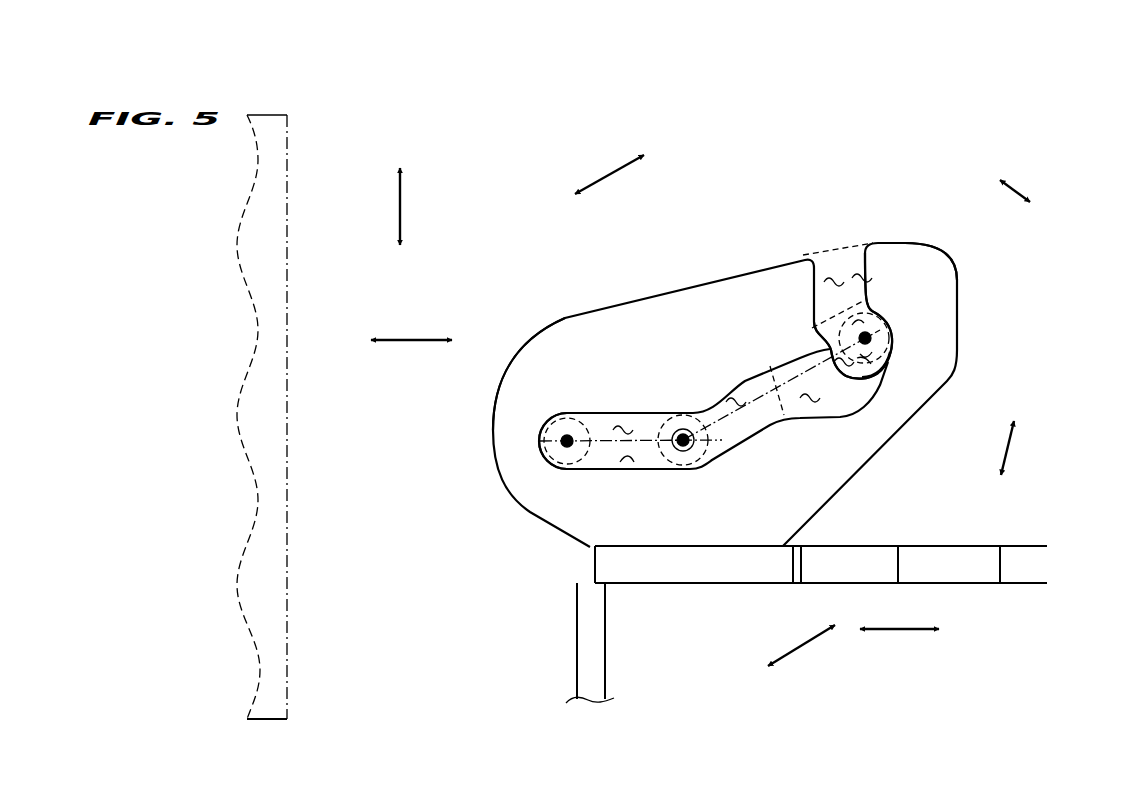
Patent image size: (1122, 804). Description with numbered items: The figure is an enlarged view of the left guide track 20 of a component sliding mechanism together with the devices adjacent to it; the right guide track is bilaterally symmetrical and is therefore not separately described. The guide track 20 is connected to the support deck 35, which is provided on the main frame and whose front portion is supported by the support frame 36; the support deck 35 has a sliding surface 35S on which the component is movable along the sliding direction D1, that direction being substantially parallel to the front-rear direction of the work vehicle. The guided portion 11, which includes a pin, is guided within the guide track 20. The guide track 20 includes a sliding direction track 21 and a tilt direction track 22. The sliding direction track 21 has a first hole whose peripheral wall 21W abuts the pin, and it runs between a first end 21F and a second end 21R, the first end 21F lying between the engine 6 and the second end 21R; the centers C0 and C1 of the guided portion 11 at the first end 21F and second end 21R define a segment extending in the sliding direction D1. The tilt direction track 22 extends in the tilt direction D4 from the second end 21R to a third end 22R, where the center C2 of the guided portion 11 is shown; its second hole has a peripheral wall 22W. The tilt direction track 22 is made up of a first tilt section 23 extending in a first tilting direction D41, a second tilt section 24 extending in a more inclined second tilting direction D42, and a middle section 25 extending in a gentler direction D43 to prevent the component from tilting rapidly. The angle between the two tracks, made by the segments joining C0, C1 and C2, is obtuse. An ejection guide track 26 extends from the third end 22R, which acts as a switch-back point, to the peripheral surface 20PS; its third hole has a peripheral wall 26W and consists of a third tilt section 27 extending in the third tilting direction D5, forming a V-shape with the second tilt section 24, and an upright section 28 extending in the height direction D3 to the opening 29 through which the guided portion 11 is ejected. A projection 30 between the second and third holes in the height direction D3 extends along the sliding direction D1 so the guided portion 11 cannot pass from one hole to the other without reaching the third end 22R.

The engine 6 is at (272, 710).
The guided portion 11 is at (578, 445).
The guide track 20 is at (970, 345).
The peripheral surface 20PS is at (930, 248).
The sliding direction track 21 is at (590, 413).
The first end 21F is at (540, 430).
The second end 21R is at (683, 440).
The peripheral wall 21W is at (635, 455).
The tilt direction track 22 is at (668, 211).
The third end 22R is at (888, 325).
The peripheral wall 22W is at (887, 380).
The first tilt section 23 is at (733, 395).
The second tilt section 24 is at (838, 355).
The middle section 25 is at (808, 392).
The ejection guide track 26 is at (852, 166).
The peripheral wall 26W is at (865, 300).
The third tilt section 27 is at (858, 290).
The upright section 28 is at (830, 280).
The opening 29 is at (858, 335).
The projection 30 is at (878, 375).
The support deck 35 is at (992, 545).
The sliding surface 35S is at (1035, 546).
The support frame 36 is at (585, 636).
The center of the guided portion C0 is at (540, 440).
The center of the guided portion C1 is at (684, 441).
The center of the guided portion C2 is at (866, 338).
The sliding direction D1 is at (405, 340).
The height direction D3 is at (400, 210).
The tilt direction D4 is at (603, 175).
The third tilting direction D5 is at (1017, 190).
The first tilting direction D41 is at (802, 650).
The second tilting direction D42 is at (1007, 450).
The gentler direction D43 is at (898, 637).